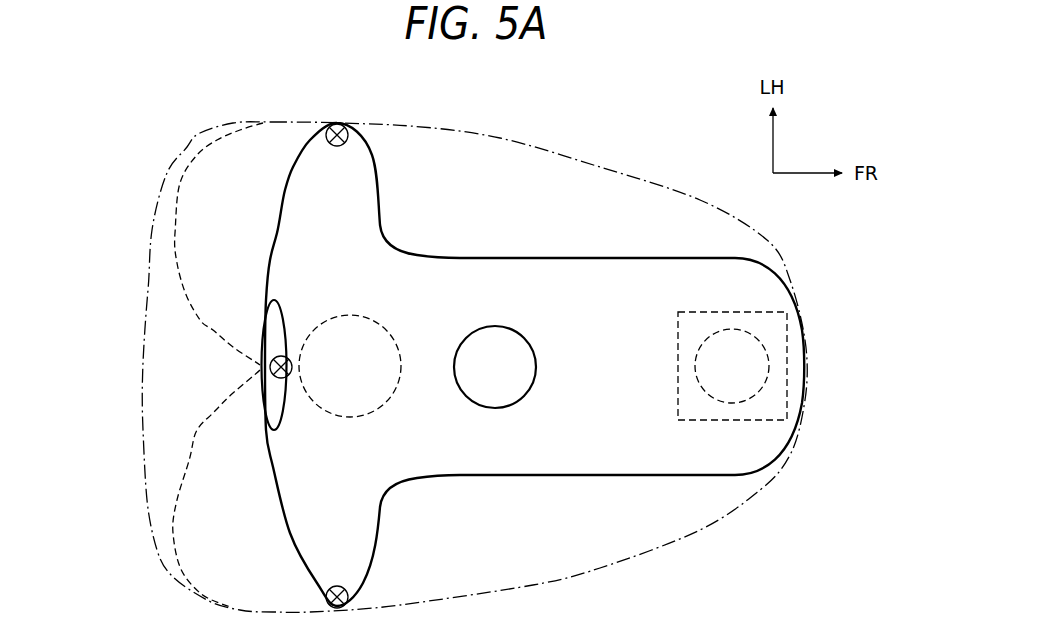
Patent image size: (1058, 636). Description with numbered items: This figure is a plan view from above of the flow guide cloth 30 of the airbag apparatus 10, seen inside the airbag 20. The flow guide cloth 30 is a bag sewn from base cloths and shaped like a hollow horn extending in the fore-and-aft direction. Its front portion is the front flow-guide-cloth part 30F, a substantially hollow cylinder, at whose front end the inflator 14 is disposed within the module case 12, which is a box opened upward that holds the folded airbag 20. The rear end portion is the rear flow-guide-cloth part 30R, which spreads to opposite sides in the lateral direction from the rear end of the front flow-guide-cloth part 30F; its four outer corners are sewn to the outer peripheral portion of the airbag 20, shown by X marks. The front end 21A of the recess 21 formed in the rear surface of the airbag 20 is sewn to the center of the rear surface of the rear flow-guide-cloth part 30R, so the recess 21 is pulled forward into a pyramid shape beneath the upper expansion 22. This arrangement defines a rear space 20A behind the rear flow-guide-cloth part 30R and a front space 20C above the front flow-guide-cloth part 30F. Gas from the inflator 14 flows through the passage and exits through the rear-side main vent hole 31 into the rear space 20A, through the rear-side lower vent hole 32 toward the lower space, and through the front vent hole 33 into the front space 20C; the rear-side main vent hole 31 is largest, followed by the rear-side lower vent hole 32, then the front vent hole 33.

The airbag apparatus 10 is at (660, 148).
The module case 12 is at (787, 342).
The inflator 14 is at (755, 397).
The airbag 20 is at (177, 163).
The rear space 20A is at (236, 215).
The front space 20C is at (524, 215).
The recess 21 is at (203, 329).
The front end of the recess 21A is at (258, 366).
The upper expansion 22 is at (152, 228).
The flow guide cloth 30 is at (432, 478).
The front flow-guide-cloth part 30F is at (610, 257).
The rear flow-guide-cloth part 30R is at (378, 168).
The rear-side main vent hole 31 is at (267, 420).
The rear-side lower vent hole 32 is at (350, 418).
The front vent hole 33 is at (535, 364).